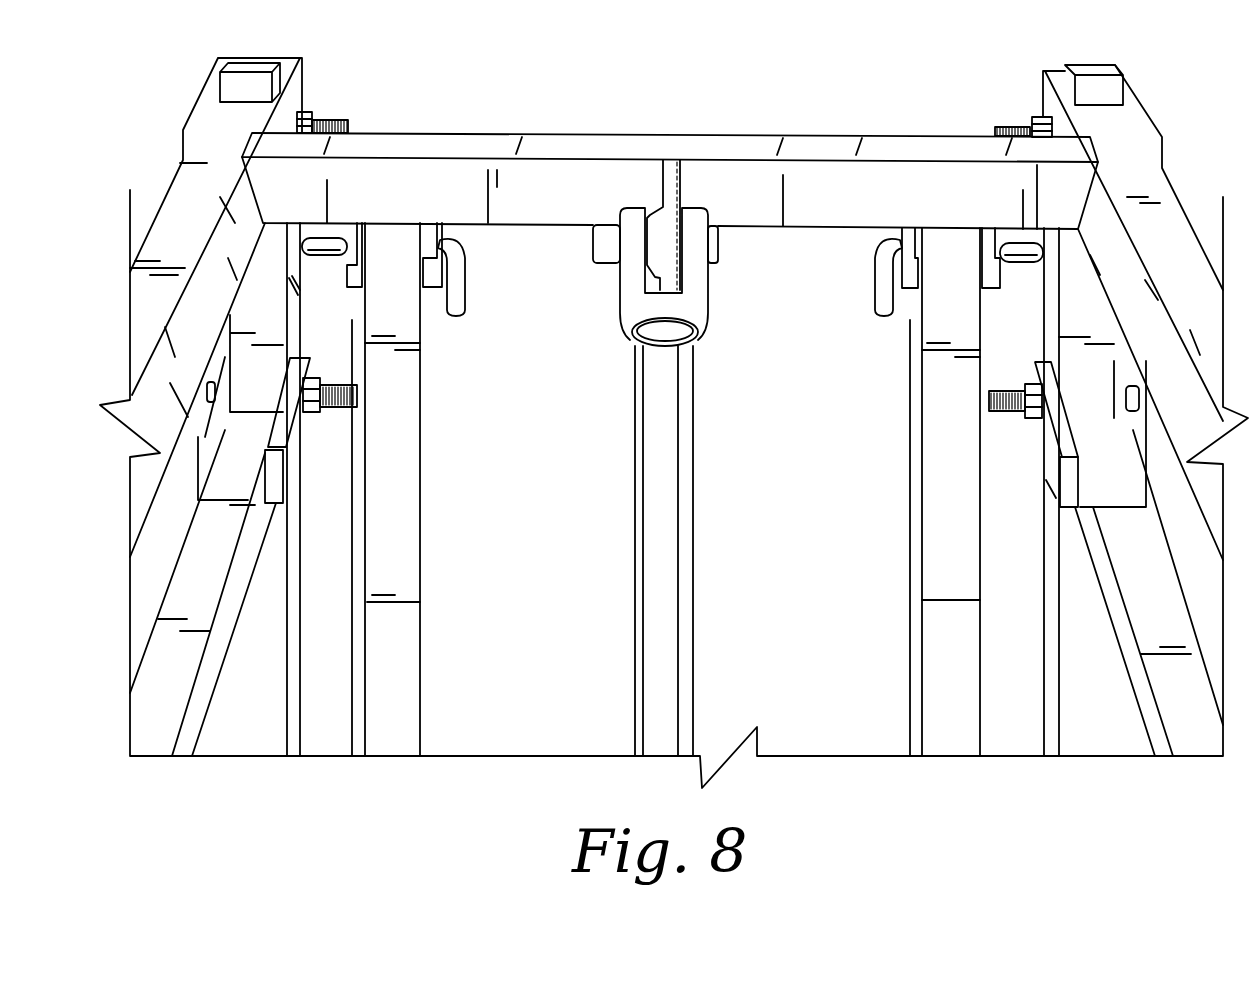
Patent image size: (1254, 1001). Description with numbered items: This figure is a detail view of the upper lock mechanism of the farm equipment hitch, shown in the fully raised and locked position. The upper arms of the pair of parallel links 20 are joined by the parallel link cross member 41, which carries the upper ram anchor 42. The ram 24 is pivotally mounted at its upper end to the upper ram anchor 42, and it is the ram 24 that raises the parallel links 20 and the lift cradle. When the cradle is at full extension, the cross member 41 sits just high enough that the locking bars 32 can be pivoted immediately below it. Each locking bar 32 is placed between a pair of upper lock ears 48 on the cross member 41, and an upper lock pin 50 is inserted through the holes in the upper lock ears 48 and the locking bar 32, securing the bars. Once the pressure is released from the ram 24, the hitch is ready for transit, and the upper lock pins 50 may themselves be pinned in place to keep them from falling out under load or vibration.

The parallel links 20 is at (178, 207).
The ram 24 is at (695, 605).
The locking bars 32 is at (418, 598).
The parallel link cross member 41 is at (425, 133).
The upper ram anchor 42 is at (672, 186).
The upper lock ears 48 is at (425, 222).
The upper lock pins 50 is at (466, 305).